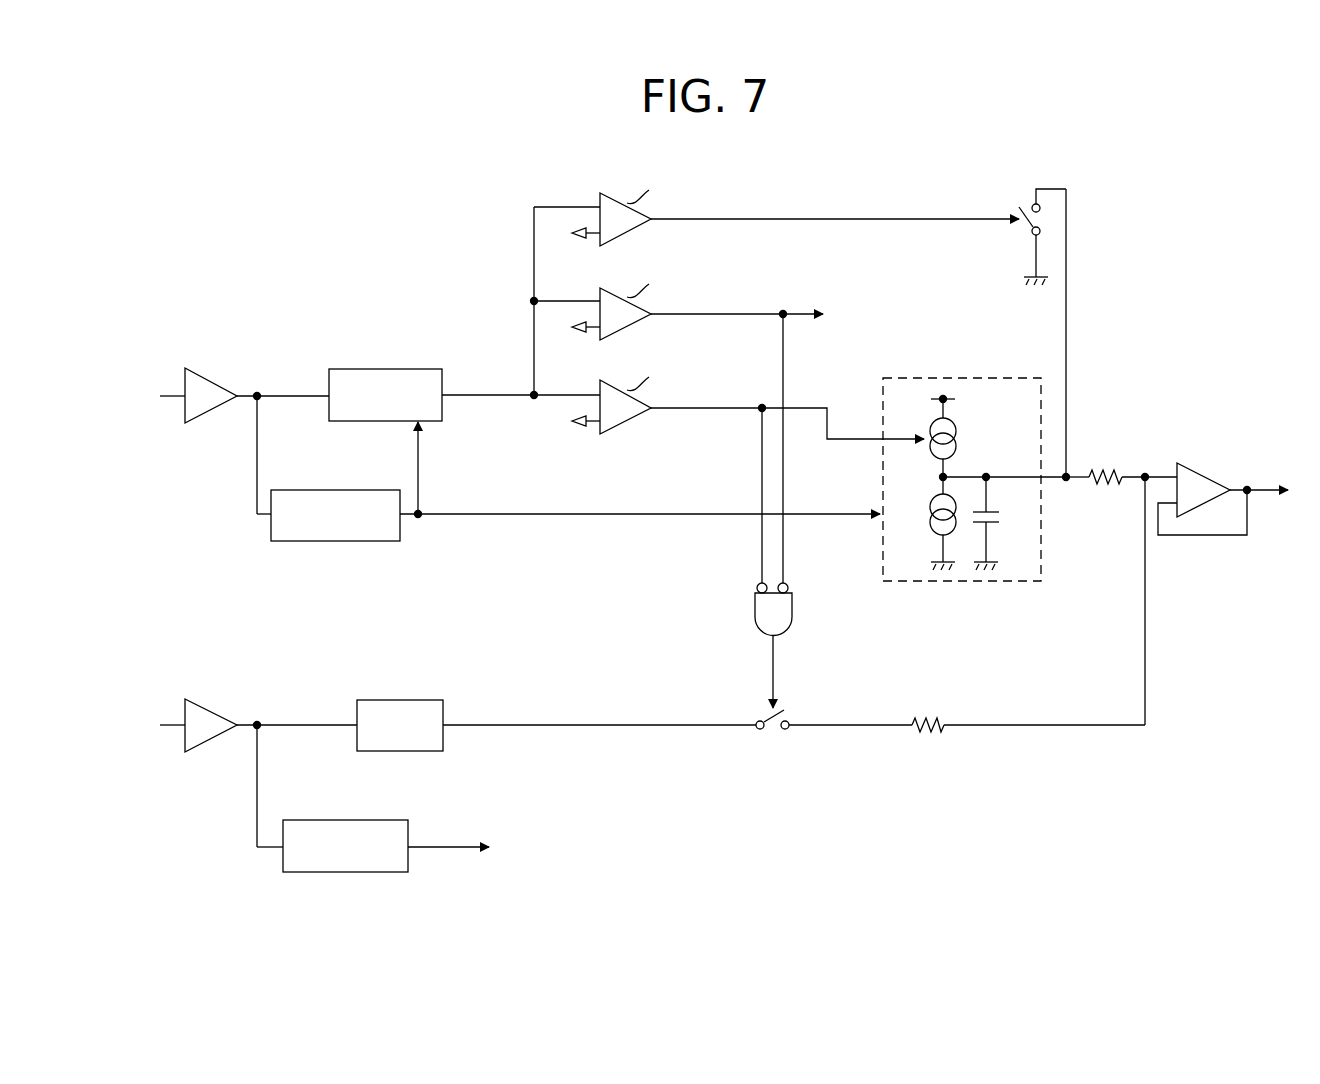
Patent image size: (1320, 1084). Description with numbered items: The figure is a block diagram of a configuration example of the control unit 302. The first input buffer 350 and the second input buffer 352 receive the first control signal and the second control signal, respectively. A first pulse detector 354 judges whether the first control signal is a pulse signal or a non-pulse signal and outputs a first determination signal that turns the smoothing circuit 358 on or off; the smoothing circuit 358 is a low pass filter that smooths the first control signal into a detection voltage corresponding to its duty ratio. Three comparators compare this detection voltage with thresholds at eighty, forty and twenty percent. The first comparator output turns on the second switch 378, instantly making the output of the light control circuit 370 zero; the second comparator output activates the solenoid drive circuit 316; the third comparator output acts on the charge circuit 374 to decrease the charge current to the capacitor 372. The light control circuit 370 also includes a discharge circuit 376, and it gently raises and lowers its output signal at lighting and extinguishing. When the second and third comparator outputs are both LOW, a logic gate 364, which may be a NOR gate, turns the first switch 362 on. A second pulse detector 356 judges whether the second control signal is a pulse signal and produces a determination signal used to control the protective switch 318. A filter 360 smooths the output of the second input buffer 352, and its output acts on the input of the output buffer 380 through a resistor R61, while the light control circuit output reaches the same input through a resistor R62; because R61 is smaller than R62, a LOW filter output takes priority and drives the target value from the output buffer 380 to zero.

The control unit 302 is at (672, 926).
The solenoid drive circuit 316 is at (826, 315).
The protective switch 318 is at (470, 848).
The first input buffer 350 is at (222, 380).
The second input buffer 352 is at (216, 709).
The first pulse detector 354 is at (342, 490).
The second pulse detector 356 is at (356, 820).
The smoothing circuit 358 is at (406, 368).
The filter 360 is at (406, 700).
The first switch 362 is at (770, 740).
The logic gate 364 is at (792, 610).
The light control circuit 370 is at (974, 507).
The capacitor 372 is at (1006, 517).
The charge circuit 374 is at (962, 438).
The discharge circuit 376 is at (931, 513).
The second switch 378 is at (1019, 233).
The output buffer 380 is at (1210, 473).
The resistor R61 is at (922, 740).
The resistor R62 is at (1111, 466).